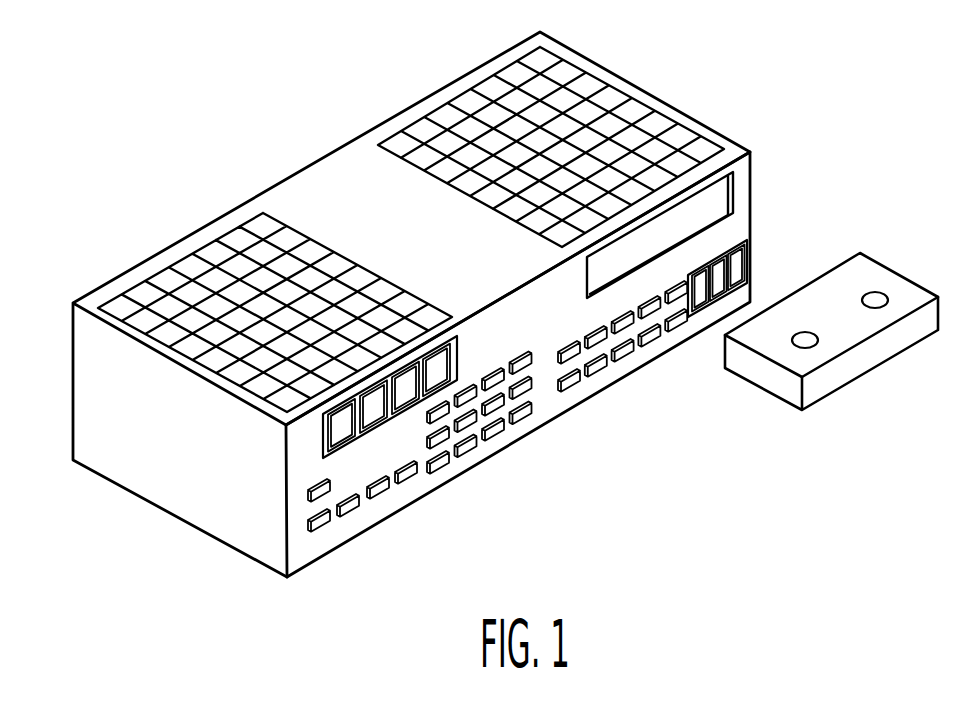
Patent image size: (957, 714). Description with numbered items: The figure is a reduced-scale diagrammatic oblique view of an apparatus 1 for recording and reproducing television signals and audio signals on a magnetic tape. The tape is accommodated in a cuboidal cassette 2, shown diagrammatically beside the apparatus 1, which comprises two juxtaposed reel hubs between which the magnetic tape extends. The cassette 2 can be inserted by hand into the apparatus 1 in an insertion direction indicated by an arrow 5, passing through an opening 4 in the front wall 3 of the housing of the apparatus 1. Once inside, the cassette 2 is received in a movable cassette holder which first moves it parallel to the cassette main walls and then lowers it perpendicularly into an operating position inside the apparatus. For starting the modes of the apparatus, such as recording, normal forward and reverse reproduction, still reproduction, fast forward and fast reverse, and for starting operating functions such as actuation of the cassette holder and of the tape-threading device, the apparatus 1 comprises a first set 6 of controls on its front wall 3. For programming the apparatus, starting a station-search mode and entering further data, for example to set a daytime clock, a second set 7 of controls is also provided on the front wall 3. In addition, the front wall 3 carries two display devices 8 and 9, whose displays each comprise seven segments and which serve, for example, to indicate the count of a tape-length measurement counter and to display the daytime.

The apparatus 1 is at (268, 188).
The cassette 2 is at (913, 273).
The front wall 3 is at (545, 403).
The opening 4 is at (718, 197).
The arrow 5 is at (903, 382).
The first set of controls 6 is at (636, 380).
The second set of controls 7 is at (455, 491).
The display device 8 is at (753, 262).
The display device 9 is at (465, 352).